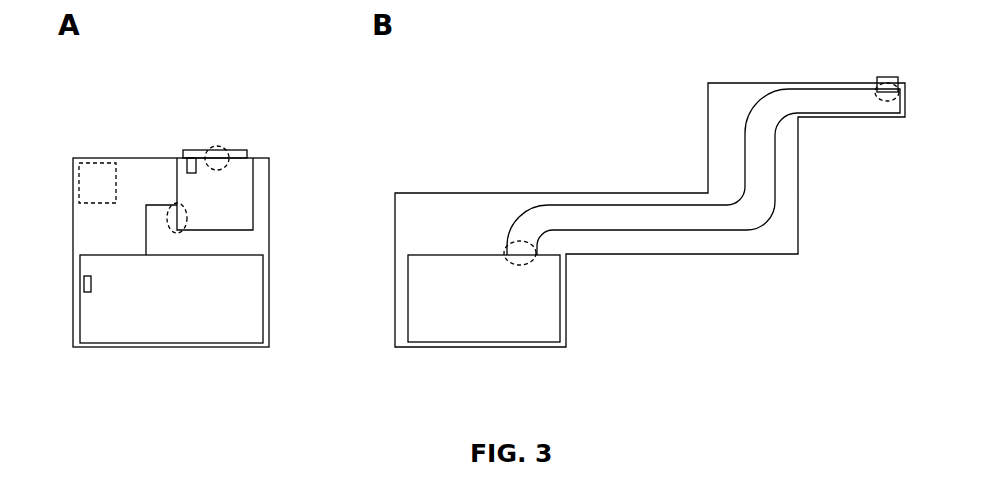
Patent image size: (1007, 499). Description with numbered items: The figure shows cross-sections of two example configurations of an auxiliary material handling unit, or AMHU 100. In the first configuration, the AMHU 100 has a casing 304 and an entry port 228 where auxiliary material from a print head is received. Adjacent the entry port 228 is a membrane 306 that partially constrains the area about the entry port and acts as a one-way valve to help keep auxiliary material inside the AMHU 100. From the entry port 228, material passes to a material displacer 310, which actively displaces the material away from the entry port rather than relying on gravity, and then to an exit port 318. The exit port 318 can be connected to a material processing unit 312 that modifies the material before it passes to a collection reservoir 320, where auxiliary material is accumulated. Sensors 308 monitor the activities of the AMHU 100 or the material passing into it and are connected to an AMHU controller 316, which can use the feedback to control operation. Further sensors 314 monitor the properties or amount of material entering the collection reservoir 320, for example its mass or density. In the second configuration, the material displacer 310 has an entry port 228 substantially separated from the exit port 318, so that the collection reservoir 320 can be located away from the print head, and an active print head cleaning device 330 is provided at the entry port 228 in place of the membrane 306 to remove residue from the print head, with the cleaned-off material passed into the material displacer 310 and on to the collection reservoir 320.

In FIG. 3A, the AMHU 100 is at (115, 398).
In FIG. 3B, the AMHU 100 is at (638, 57).
In FIG. 3A, the entry port 228 is at (212, 152).
In FIG. 3B, the entry port 228 is at (895, 98).
In FIG. 3A, the casing 304 is at (270, 238).
In FIG. 3B, the casing 304 is at (798, 195).
In FIG. 3A, the membrane 306 is at (235, 152).
In FIG. 3A, the sensor 308 is at (192, 160).
In FIG. 3A, the material displacer 310 is at (240, 200).
In FIG. 3B, the material displacer 310 is at (590, 212).
In FIG. 3A, the material processing unit 312 is at (152, 227).
In FIG. 3A, the sensor 314 is at (88, 290).
In FIG. 3A, the AMHU controller 316 is at (100, 173).
In FIG. 3A, the exit port 318 is at (167, 213).
In FIG. 3B, the exit port 318 is at (503, 252).
In FIG. 3A, the collection reservoir 320 is at (200, 330).
In FIG. 3B, the collection reservoir 320 is at (498, 323).
In FIG. 3B, the active print head cleaning device 330 is at (885, 77).